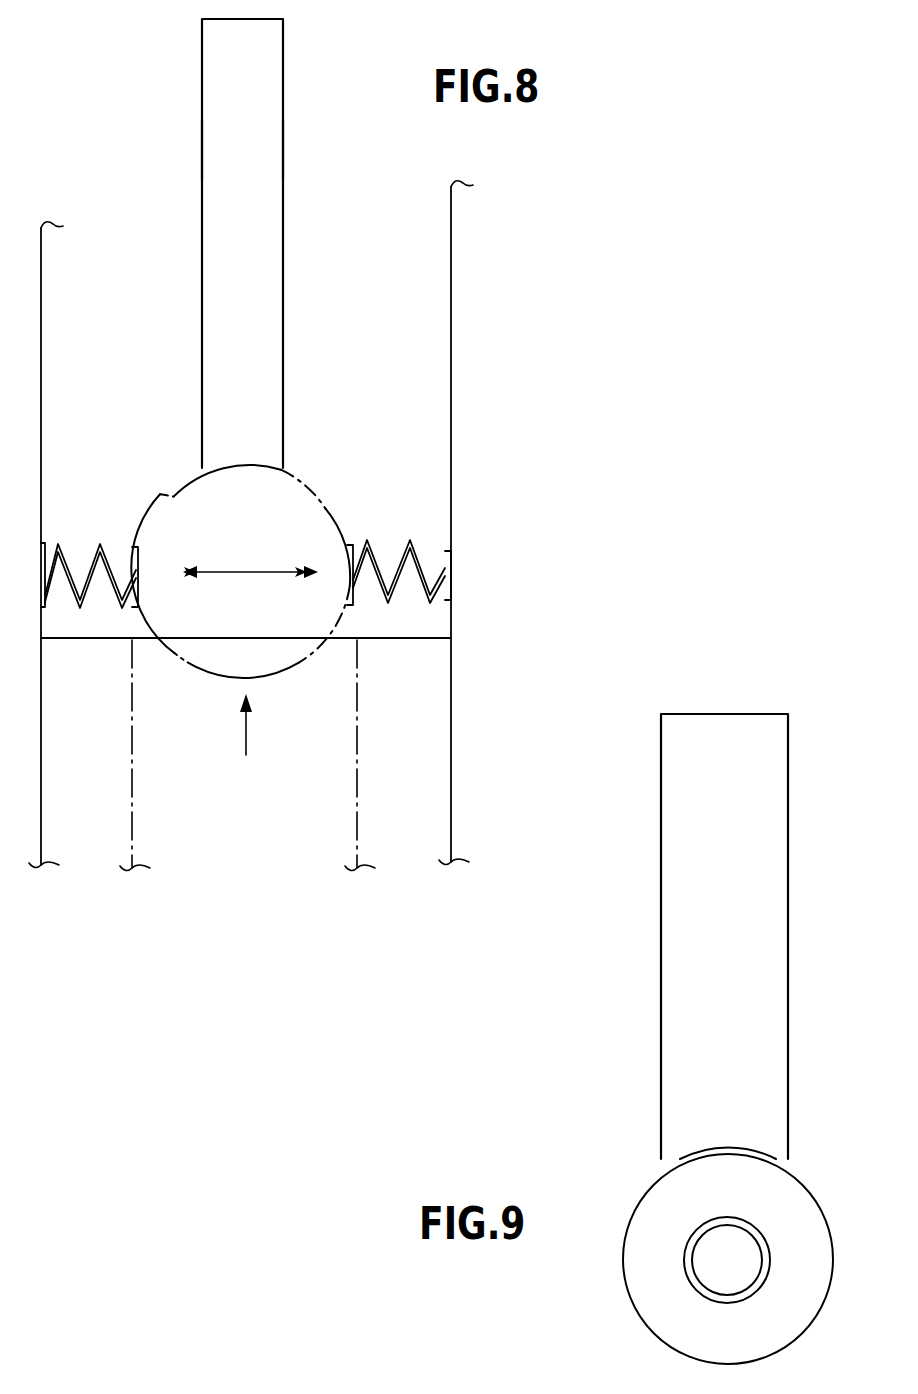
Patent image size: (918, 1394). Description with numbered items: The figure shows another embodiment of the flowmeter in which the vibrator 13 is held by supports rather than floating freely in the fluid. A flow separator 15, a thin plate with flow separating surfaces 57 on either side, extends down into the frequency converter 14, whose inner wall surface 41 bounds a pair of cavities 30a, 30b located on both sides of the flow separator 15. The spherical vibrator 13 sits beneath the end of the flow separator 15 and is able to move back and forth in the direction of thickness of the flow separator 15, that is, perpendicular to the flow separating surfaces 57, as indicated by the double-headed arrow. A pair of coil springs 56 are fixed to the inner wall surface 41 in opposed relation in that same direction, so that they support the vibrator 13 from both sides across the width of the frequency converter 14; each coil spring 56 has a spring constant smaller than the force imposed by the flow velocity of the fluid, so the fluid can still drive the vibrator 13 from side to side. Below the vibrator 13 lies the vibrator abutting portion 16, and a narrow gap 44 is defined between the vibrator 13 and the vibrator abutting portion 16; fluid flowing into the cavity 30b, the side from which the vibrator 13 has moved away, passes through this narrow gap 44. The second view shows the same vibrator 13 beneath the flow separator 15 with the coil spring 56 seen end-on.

In FIG. 8, the vibrator 13 is at (320, 497).
In FIG. 9, the vibrator 13 is at (638, 1203).
In FIG. 8, the frequency converter 14 is at (470, 303).
In FIG. 8, the flow separator 15 is at (283, 99).
In FIG. 9, the flow separator 15 is at (788, 897).
In FIG. 8, the vibrator abutting portion 16 is at (133, 650).
In FIG. 8, the cavity 30a is at (120, 333).
In FIG. 8, the cavity 30b is at (360, 305).
In FIG. 8, the inner wall surface 41 is at (42, 470).
In FIG. 8, the narrow gap 44 is at (157, 660).
In FIG. 8, the coil spring 56 is at (97, 549).
In FIG. 9, the coil spring 56 is at (684, 1272).
In FIG. 8, the flow separating surfaces 57 is at (200, 147).